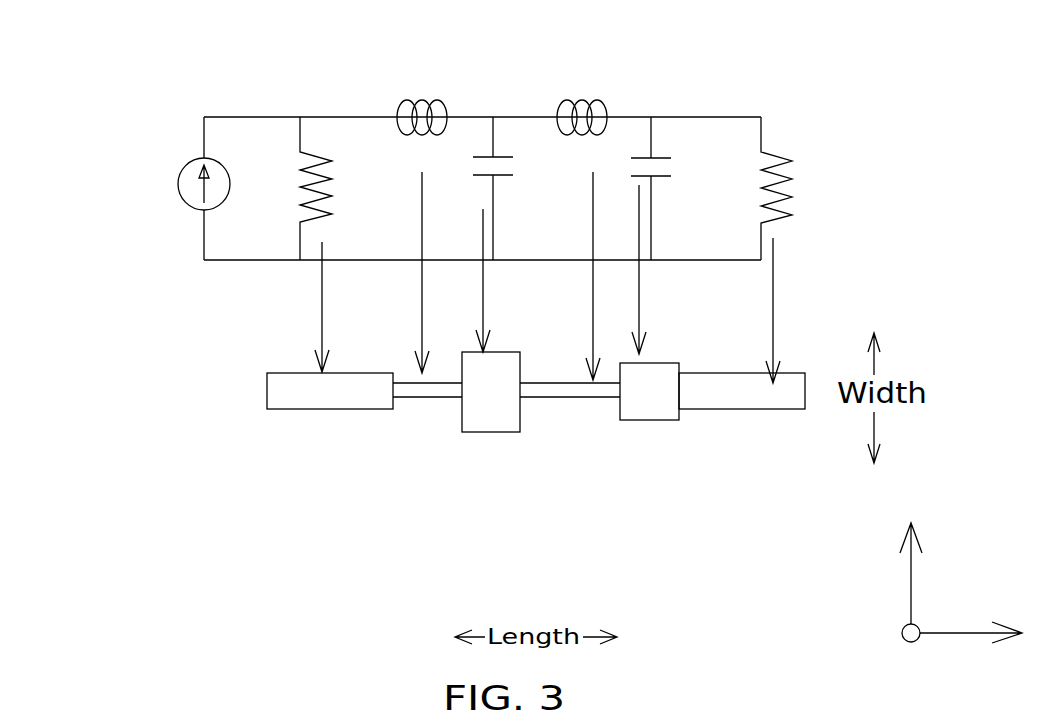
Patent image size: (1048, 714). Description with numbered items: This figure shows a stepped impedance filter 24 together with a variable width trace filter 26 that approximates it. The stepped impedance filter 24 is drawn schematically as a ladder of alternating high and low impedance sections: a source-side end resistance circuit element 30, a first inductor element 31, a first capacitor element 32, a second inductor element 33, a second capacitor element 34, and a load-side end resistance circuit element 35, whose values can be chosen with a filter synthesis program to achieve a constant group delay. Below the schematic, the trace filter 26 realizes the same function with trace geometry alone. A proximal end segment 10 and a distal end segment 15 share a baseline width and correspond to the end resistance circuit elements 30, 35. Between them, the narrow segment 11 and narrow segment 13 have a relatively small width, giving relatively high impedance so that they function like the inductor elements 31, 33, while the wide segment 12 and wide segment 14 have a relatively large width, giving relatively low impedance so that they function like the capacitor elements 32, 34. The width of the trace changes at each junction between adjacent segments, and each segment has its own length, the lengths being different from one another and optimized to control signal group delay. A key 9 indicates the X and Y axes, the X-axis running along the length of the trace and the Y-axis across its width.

The key 9 is at (850, 662).
The end segment 10 is at (353, 397).
The narrow segment 11 is at (458, 398).
The wide segment 12 is at (520, 432).
The narrow segment 13 is at (620, 398).
The wide segment 14 is at (620, 420).
The end segment 15 is at (738, 397).
The stepped impedance filter 24 is at (182, 115).
The trace filter 26 is at (258, 351).
The end resistance circuit element 30 is at (320, 115).
The inductor element 31 is at (453, 103).
The capacitor element 32 is at (513, 115).
The inductor element 33 is at (610, 103).
The capacitor element 34 is at (671, 115).
The end resistance circuit element 35 is at (783, 120).